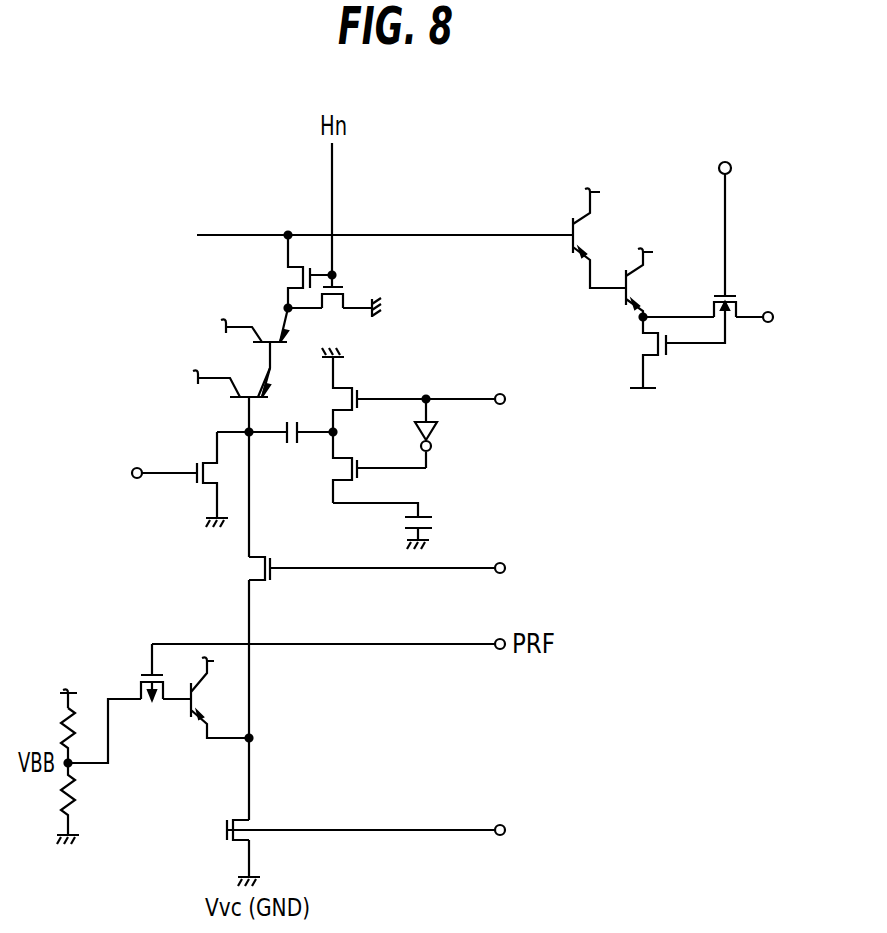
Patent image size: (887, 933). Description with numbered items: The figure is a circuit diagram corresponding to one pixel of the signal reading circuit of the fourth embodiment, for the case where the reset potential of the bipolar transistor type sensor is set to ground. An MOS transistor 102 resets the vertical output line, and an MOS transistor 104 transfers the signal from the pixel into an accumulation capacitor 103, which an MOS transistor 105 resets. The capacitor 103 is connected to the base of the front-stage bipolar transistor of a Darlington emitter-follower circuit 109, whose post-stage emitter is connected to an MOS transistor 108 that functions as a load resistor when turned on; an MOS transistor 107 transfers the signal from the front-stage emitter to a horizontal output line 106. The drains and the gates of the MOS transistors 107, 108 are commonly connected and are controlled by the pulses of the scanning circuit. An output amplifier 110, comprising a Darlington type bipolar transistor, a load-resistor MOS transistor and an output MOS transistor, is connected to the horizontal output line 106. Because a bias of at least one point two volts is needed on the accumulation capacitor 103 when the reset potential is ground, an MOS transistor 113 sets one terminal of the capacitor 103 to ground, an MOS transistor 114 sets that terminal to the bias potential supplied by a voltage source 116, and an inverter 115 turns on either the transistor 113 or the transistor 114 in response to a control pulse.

The MOS transistor 102 is at (264, 820).
The accumulation capacitor 103 is at (296, 448).
The MOS transistor 104 is at (273, 556).
The MOS transistor 105 is at (193, 485).
The horizontal output line 106 is at (487, 232).
The MOS transistor 107 is at (282, 276).
The MOS transistor 108 is at (352, 287).
The Darlington emitter-follower circuit 109 is at (180, 312).
The output amplifier 110 is at (660, 172).
The MOS transistor 113 is at (364, 386).
The MOS transistor 114 is at (346, 452).
The inverter 115 is at (432, 441).
The voltage source 116 is at (438, 532).